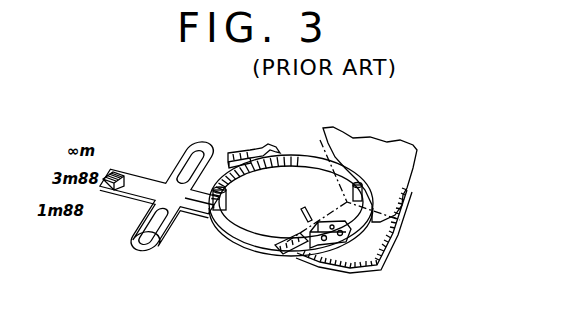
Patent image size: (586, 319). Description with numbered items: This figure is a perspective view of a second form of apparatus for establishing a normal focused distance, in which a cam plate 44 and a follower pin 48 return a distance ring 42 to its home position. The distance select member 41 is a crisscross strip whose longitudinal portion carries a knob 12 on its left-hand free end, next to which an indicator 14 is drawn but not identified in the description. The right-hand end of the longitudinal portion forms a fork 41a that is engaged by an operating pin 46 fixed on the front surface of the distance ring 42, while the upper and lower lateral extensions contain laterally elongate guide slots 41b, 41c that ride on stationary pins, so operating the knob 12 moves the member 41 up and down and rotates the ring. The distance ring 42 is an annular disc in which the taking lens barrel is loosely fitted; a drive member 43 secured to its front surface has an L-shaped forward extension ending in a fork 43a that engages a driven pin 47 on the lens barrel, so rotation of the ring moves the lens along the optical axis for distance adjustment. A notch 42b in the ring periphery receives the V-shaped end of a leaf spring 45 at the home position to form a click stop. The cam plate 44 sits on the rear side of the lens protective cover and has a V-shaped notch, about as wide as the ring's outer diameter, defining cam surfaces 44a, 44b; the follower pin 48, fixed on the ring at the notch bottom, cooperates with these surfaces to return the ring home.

The knob 12 is at (118, 173).
The index arrow 14 is at (110, 149).
The distance select member 41 is at (128, 197).
The fork 41a is at (212, 215).
The guide slot 41b is at (190, 162).
The guide slot 41c is at (140, 237).
The distance ring 42 is at (247, 240).
The notch 42b is at (278, 158).
The drive member 43 is at (343, 252).
The fork 43a is at (303, 254).
The cam plate 44 is at (403, 197).
The cam surface 44a is at (345, 137).
The cam surface 44b is at (390, 227).
The leaf spring 45 is at (245, 153).
The operating pin 46 is at (228, 197).
The driven pin 47 is at (304, 212).
The follower pin 48 is at (359, 183).